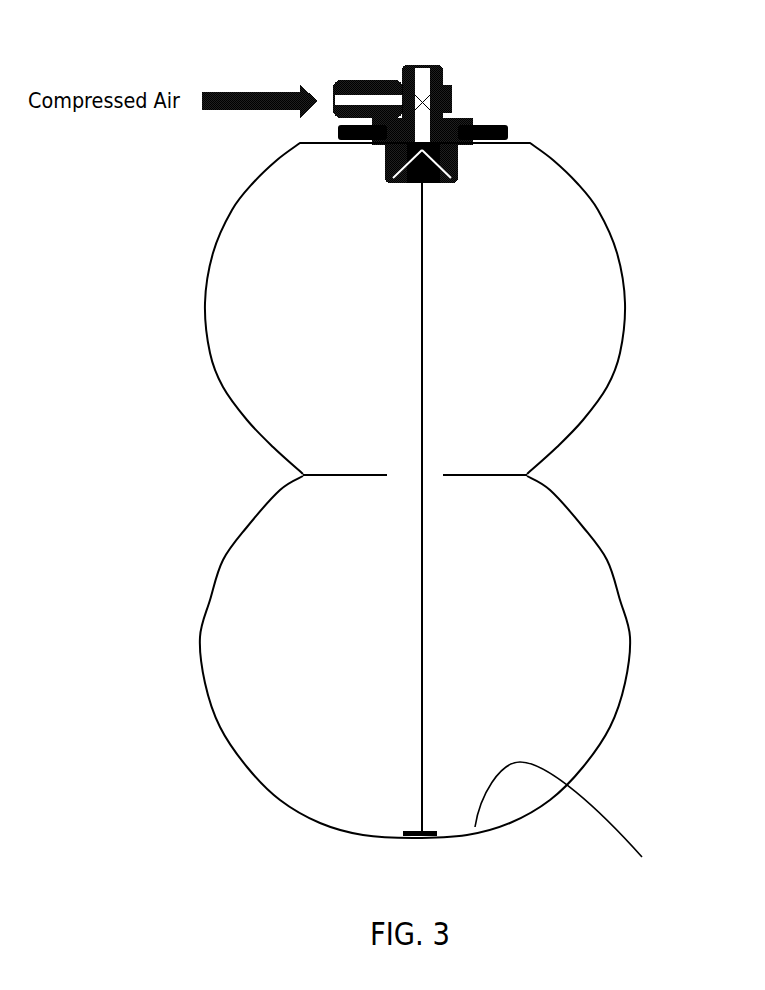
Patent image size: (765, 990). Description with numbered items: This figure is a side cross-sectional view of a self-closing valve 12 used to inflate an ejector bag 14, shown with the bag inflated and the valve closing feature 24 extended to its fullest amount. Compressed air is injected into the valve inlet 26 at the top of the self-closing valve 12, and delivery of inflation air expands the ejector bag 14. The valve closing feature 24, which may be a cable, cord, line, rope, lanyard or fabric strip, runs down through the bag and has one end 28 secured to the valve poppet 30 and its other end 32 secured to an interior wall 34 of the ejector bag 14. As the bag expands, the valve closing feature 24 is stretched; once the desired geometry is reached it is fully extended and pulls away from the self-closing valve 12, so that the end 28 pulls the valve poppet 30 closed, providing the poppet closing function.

The self-closing valve 12 is at (461, 104).
The ejector bag 14 is at (442, 507).
The valve closing feature 24 is at (425, 253).
The valve inlet 26 is at (358, 100).
The end 28 is at (380, 208).
The valve poppet 30 is at (442, 153).
The other end 32 is at (390, 809).
The interior wall 34 is at (582, 828).